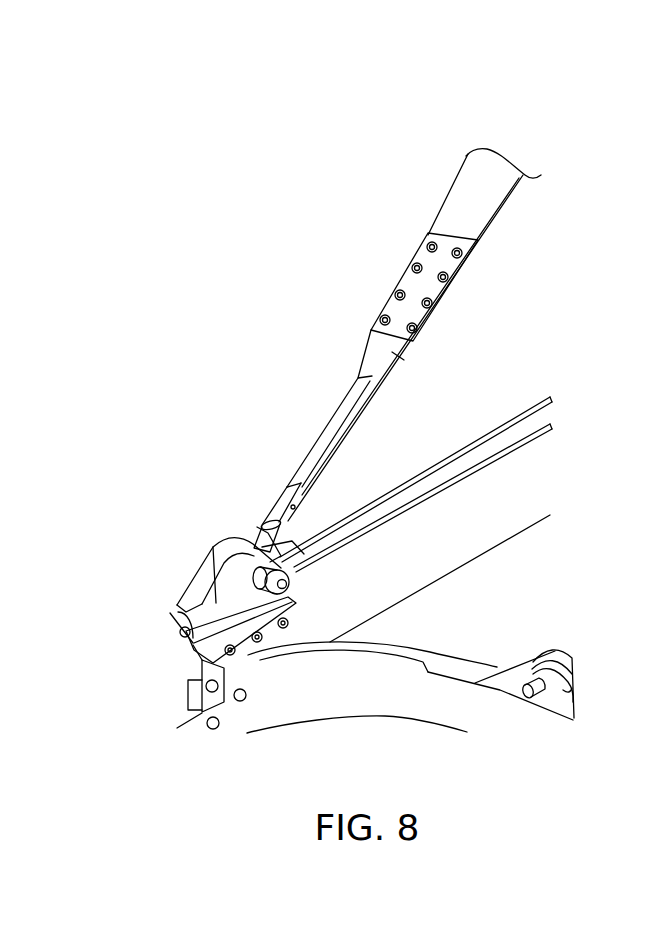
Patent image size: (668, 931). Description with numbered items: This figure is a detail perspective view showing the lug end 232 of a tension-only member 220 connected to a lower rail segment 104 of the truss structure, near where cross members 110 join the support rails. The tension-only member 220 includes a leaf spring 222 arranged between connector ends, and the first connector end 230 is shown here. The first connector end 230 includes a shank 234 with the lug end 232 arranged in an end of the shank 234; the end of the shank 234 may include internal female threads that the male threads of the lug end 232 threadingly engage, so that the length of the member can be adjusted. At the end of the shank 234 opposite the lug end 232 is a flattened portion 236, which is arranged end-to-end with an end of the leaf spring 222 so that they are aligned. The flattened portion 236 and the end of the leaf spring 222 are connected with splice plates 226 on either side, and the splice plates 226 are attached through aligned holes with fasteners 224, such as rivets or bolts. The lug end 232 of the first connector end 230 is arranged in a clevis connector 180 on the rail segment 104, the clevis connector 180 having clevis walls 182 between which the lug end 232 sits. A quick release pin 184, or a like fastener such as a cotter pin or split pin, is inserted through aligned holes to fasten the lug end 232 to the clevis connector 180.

The lower rail segment 104 is at (452, 542).
The cross members 110 is at (364, 706).
The clevis connector 180 is at (185, 471).
The clevis walls 182 is at (222, 547).
The quick release pin 184 is at (290, 575).
The tension-only member 220 is at (538, 240).
The leaf spring 222 is at (481, 206).
The fasteners 224 is at (432, 246).
The splice plates 226 is at (446, 290).
The first connector end 230 is at (293, 358).
The lug end 232 is at (248, 544).
The shank 234 is at (322, 438).
The flattened portion 236 is at (398, 355).